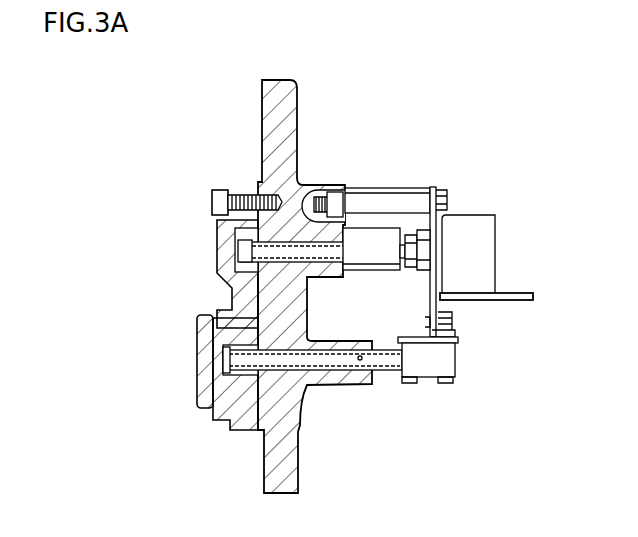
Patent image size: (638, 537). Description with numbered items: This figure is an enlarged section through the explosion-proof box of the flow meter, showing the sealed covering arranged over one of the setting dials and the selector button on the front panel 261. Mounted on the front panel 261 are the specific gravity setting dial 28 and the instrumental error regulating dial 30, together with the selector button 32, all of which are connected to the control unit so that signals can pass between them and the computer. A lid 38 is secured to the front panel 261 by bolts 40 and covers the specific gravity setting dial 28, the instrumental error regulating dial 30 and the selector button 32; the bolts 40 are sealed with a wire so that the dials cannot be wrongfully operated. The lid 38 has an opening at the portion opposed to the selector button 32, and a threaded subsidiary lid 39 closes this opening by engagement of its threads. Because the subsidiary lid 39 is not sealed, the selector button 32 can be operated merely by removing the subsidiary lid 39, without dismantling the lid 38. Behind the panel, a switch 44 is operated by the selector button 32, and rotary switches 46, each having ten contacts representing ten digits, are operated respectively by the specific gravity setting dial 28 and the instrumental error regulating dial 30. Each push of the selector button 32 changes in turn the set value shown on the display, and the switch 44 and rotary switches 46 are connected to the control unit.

The front panel 261 is at (262, 93).
The bolts 40 is at (238, 192).
The specific gravity setting dial 28 is at (280, 250).
The instrumental error regulating dial 30 is at (240, 248).
The lid 38 is at (220, 280).
The subsidiary lid 39 is at (198, 357).
The selector button 32 is at (222, 378).
The rotary switches 46 is at (478, 222).
The switch 44 is at (428, 370).